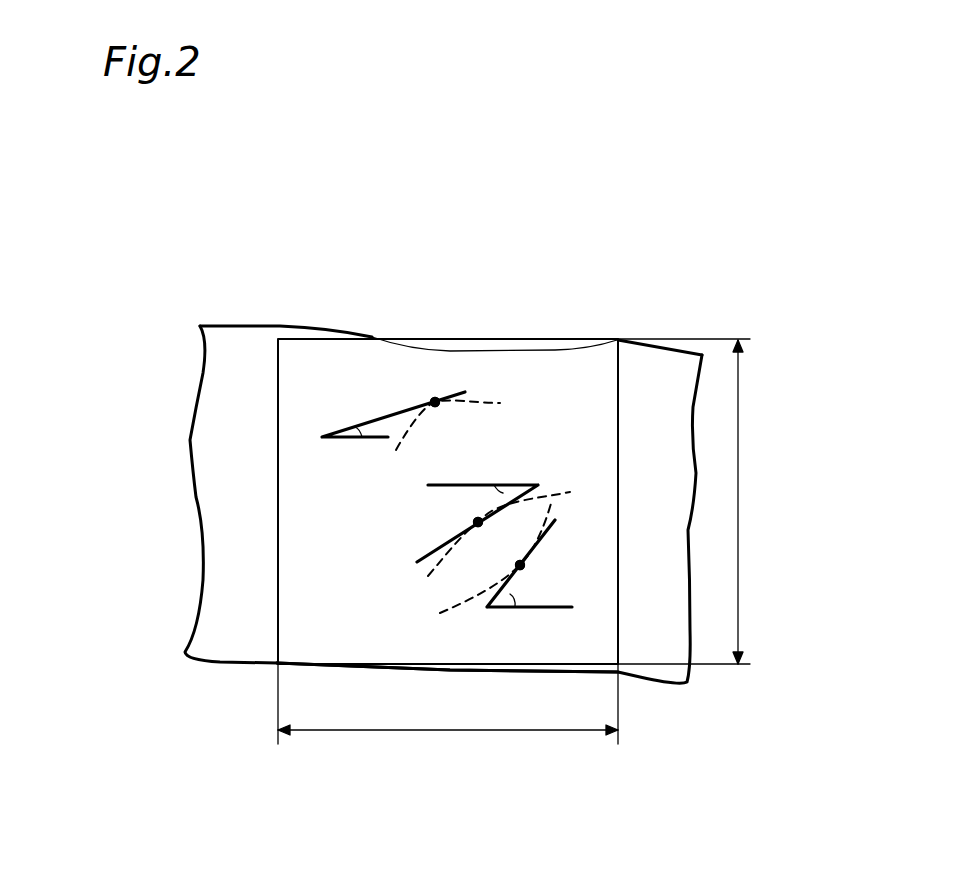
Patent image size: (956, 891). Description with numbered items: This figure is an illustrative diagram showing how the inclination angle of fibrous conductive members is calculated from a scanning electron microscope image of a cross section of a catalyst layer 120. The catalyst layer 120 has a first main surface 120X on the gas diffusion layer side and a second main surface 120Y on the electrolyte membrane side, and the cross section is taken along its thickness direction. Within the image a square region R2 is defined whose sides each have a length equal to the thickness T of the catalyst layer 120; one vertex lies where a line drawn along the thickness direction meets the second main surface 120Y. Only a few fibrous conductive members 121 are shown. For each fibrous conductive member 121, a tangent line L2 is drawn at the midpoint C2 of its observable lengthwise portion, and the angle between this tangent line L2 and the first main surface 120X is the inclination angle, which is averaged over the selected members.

The catalyst layer 120 is at (655, 382).
The first main surface 120X is at (292, 327).
The second main surface 120Y is at (235, 671).
The fibrous conductive member 121 is at (452, 402).
The square region R2 is at (518, 249).
The tangent line L2 is at (576, 545).
The midpoint C2 is at (434, 407).
The thickness T is at (523, 556).